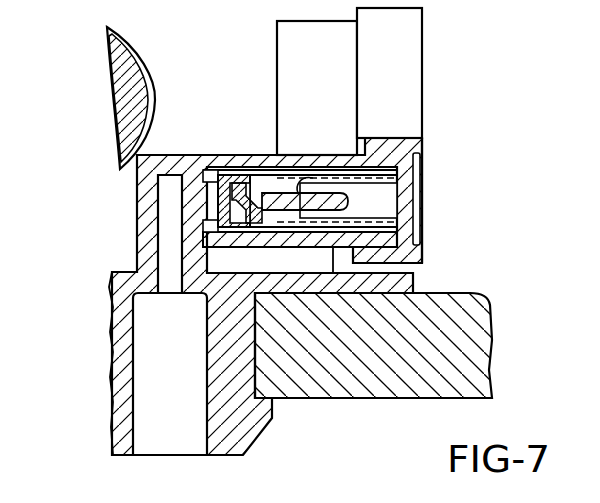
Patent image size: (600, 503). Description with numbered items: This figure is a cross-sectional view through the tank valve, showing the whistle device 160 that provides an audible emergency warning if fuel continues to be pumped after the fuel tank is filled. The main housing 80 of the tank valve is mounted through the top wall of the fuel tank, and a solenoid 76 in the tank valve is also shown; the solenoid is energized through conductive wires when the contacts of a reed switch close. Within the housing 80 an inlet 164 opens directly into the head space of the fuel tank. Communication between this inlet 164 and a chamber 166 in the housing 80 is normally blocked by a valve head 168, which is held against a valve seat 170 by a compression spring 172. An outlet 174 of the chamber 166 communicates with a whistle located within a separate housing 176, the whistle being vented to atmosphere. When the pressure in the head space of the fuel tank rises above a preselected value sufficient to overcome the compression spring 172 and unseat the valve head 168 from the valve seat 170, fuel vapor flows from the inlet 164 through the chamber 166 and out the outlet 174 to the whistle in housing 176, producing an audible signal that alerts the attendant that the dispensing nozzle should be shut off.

The solenoid 76 is at (112, 62).
The housing 80 is at (270, 422).
The whistle device 160 is at (494, 38).
The inlet 164 is at (202, 428).
The chamber 166 is at (262, 165).
The valve head 168 is at (291, 181).
The valve seat 170 is at (216, 162).
The compression spring 172 is at (300, 183).
The outlet 174 is at (320, 183).
The housing 176 is at (277, 45).